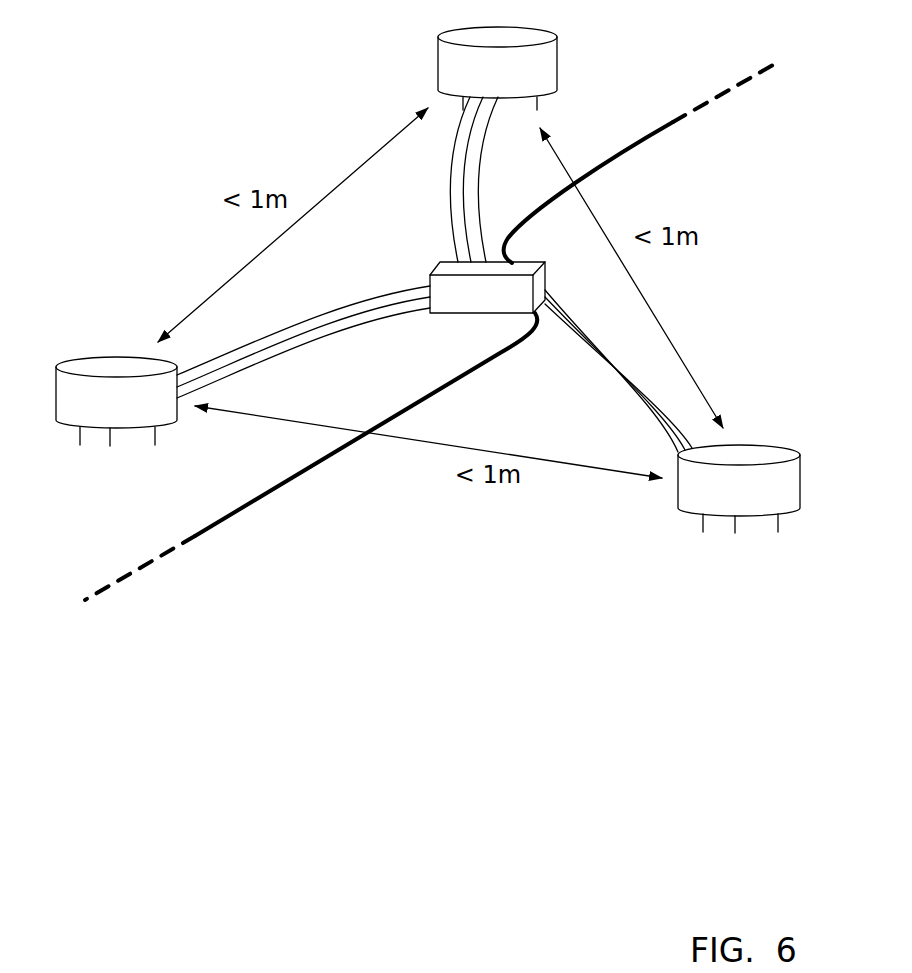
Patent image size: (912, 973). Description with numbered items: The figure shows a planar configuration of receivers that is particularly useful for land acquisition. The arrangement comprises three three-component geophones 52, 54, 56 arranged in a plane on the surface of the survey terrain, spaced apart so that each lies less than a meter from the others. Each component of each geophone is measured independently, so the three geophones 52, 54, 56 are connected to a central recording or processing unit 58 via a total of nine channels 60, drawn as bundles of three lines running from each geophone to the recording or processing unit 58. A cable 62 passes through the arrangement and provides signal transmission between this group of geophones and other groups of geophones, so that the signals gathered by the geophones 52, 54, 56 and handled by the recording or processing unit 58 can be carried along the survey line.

The 3C geophone 52 is at (57, 370).
The 3C geophone 54 is at (560, 36).
The 3C geophone 56 is at (762, 444).
The recording or processing unit 58 is at (438, 264).
The channels 60 is at (466, 190).
The cable 62 is at (638, 147).